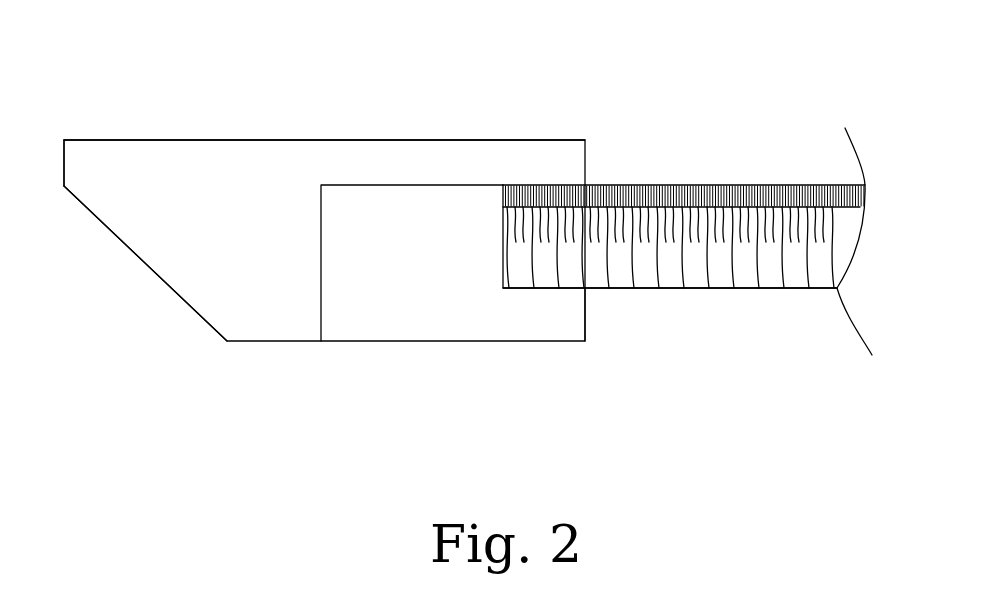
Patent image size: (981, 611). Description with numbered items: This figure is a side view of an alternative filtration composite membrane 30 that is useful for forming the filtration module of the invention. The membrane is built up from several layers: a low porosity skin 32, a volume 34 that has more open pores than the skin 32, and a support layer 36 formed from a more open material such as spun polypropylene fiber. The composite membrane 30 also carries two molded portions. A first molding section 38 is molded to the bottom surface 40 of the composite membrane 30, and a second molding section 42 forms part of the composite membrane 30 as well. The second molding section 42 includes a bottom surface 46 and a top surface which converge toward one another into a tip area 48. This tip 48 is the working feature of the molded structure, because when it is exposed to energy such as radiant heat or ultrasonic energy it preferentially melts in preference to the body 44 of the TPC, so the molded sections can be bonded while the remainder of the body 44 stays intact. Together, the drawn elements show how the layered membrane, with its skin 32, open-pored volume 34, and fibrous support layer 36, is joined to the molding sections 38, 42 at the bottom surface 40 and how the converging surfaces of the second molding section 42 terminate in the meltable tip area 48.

The filtration composite membrane 30 is at (593, 118).
The low porosity skin 32 is at (652, 185).
The volume 34 is at (749, 185).
The support layer 36 is at (748, 280).
The first molding section 38 is at (480, 316).
The bottom surface 40 is at (638, 288).
The second molding section 42 is at (352, 162).
The body 44 is at (247, 140).
The bottom surface 46 is at (145, 263).
The tip area 48 is at (64, 163).